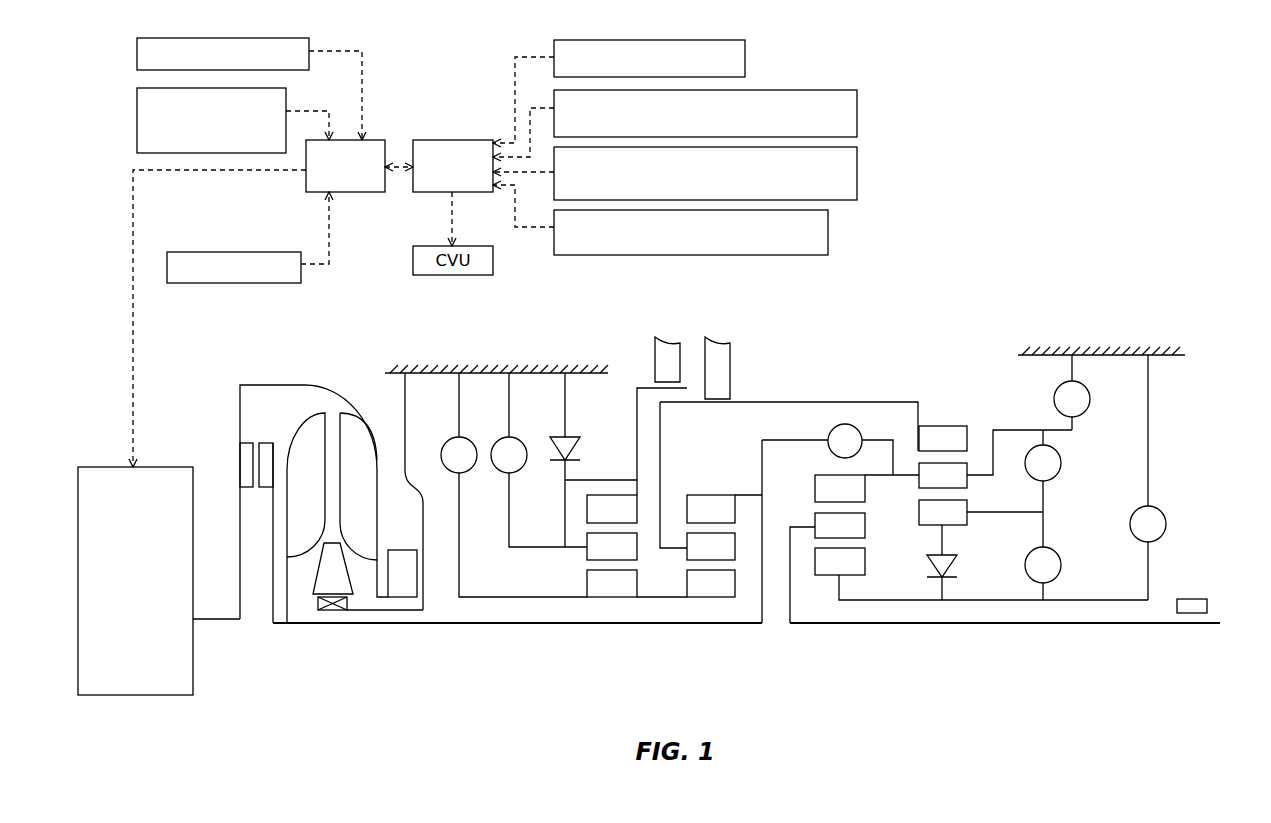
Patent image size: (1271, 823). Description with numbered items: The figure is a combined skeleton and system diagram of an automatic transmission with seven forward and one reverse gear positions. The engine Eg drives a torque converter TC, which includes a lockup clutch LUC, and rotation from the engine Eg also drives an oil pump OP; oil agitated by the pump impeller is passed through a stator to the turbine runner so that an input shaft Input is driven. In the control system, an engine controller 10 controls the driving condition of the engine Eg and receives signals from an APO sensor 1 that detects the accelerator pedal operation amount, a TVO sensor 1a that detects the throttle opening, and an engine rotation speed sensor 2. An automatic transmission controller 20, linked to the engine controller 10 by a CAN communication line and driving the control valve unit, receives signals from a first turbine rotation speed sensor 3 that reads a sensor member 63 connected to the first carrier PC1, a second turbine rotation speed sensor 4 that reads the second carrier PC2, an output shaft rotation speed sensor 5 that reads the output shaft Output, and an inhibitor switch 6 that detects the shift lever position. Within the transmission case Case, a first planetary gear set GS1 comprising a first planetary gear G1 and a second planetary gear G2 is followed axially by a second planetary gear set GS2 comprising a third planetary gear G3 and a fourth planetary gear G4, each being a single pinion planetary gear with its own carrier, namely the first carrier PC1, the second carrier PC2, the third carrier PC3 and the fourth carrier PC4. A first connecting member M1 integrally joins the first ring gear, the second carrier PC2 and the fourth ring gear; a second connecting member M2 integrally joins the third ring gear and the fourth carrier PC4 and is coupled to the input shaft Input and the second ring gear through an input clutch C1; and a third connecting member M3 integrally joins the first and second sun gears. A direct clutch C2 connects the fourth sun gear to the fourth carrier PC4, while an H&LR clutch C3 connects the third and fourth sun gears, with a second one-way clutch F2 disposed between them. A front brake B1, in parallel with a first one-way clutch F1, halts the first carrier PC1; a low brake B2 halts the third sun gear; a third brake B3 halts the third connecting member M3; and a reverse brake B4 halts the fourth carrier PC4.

The APO sensor 1 is at (137, 55).
The TVO sensor 1a is at (186, 252).
The engine rotation speed sensor 2 is at (137, 121).
The first turbine rotation speed sensor 3 is at (859, 105).
The second turbine rotation speed sensor 4 is at (859, 167).
The output shaft rotation speed sensor 5 is at (830, 232).
The inhibitor switch 6 is at (746, 58).
The engine controller (ECU) 10 is at (381, 140).
The automatic transmission controller (ATCU) 20 is at (440, 140).
The sensor member 63 is at (637, 440).
The engine Eg is at (167, 467).
The torque converter TC is at (315, 383).
The lockup clutch LUC is at (257, 440).
The oil pump OP is at (402, 550).
The transmission case Case is at (474, 380).
The input shaft Input is at (423, 624).
The output shaft Output is at (1064, 624).
The first planetary gear G1 is at (582, 647).
The second planetary gear G2 is at (683, 647).
The third planetary gear G3 is at (812, 647).
The fourth planetary gear G4 is at (972, 647).
The first planetary gear set GS1 is at (583, 682).
The second planetary gear set GS2 is at (818, 682).
The first carrier PC1 is at (576, 549).
The second carrier PC2 is at (664, 548).
The third carrier PC3 is at (800, 527).
The fourth carrier PC4 is at (980, 477).
The first connecting member M1 is at (836, 402).
The second connecting member M2 is at (878, 478).
The third connecting member M3 is at (660, 598).
The front brake B1 is at (539, 460).
The low brake B2 is at (1148, 477).
The 2346 brake B3 is at (514, 485).
The reverse brake B4 is at (1072, 392).
The input clutch C1 is at (827, 449).
The direct clutch C2 is at (1043, 488).
The H&LR clutch C3 is at (1043, 573).
The first one-way clutch F1 is at (576, 436).
The second one-way clutch F2 is at (956, 562).